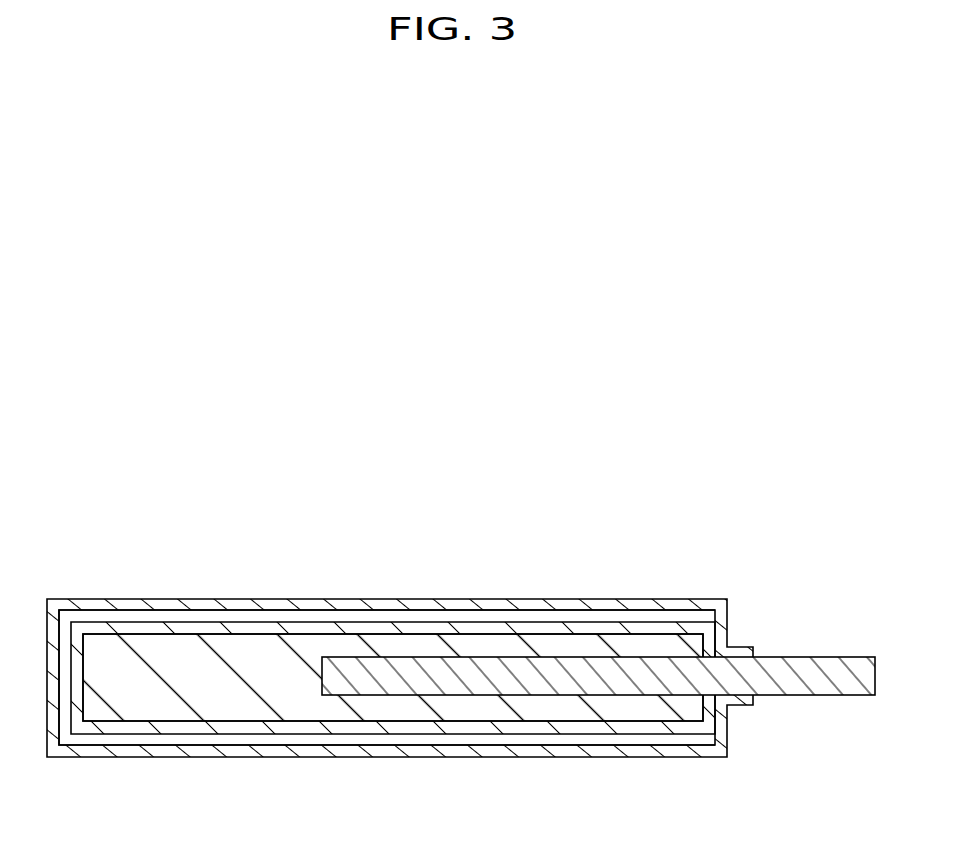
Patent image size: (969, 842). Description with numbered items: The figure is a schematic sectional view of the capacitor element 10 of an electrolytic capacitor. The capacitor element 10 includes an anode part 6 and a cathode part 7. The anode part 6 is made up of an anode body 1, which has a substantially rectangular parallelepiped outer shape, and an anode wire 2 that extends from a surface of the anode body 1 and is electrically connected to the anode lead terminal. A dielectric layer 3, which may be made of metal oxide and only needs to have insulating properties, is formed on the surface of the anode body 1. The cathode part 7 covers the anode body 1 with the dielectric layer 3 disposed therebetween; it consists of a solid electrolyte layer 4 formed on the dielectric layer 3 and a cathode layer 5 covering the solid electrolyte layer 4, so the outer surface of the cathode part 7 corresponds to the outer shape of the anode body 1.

The anode body 1 is at (438, 646).
The anode wire 2 is at (523, 678).
The dielectric layer 3 is at (630, 625).
The solid electrolyte layer 4 is at (191, 622).
The cathode layer 5 is at (247, 500).
The anode part 6 is at (461, 611).
The cathode part 7 is at (387, 605).
The capacitor element 10 is at (461, 474).